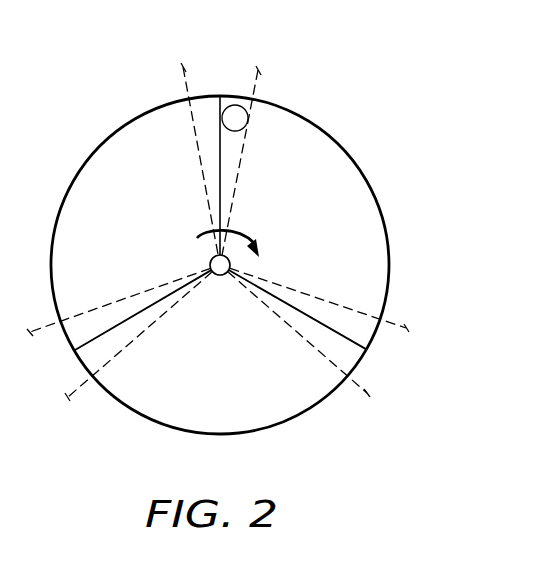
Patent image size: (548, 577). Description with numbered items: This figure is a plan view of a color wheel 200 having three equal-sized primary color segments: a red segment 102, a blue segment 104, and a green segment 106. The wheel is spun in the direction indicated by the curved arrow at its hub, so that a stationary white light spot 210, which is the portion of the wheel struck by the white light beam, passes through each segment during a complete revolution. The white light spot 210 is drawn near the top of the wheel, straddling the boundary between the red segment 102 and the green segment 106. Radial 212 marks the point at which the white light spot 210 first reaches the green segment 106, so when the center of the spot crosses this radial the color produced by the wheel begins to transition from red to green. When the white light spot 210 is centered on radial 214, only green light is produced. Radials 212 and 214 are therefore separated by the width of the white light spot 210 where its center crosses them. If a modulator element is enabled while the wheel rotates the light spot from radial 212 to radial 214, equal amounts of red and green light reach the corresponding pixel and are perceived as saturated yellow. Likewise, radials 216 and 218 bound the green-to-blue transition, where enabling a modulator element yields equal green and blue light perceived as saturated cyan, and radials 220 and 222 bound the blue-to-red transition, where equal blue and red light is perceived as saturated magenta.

The color wheel 200 is at (331, 51).
The red segment 102 is at (364, 185).
The blue segment 104 is at (225, 427).
The green segment 106 is at (83, 172).
The white light spot 210 is at (234, 105).
The radial 212 is at (261, 74).
The radial 214 is at (183, 76).
The radial 216 is at (35, 330).
The radial 218 is at (70, 395).
The radial 220 is at (371, 390).
The radial 222 is at (407, 328).